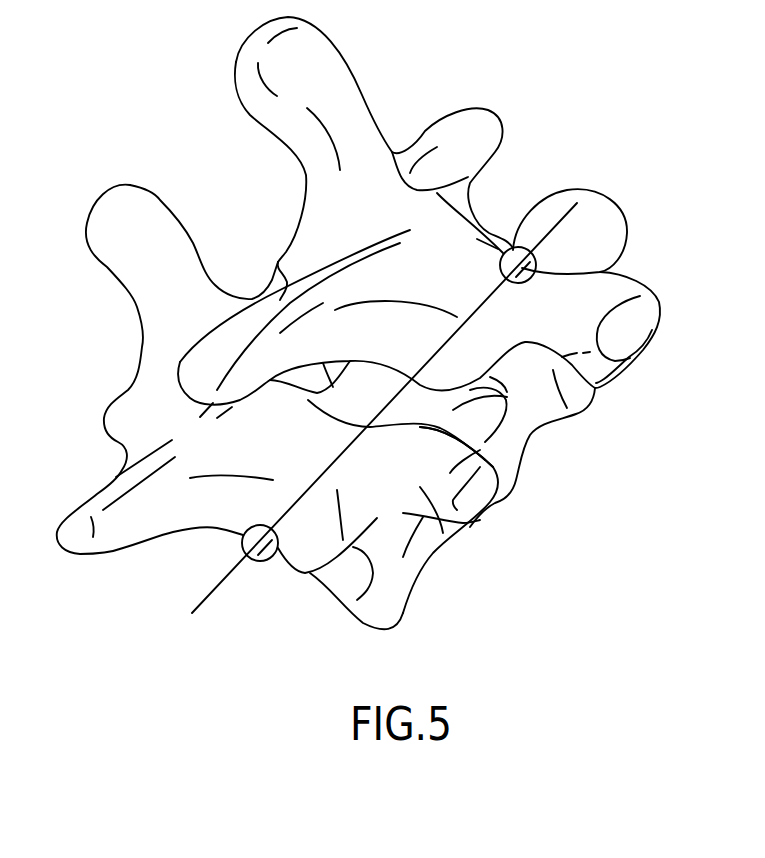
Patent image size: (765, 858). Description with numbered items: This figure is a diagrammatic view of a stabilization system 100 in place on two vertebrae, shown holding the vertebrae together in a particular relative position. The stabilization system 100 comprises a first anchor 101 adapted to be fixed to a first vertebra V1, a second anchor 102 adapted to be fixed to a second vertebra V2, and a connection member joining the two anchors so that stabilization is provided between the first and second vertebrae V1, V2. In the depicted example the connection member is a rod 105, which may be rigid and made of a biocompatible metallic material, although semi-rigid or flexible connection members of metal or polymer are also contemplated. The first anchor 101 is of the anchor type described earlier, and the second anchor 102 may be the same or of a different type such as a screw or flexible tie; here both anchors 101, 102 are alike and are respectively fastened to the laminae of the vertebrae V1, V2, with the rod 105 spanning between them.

The first vertebra V1 is at (163, 367).
The second vertebra V2 is at (347, 237).
The stabilization system 100 is at (397, 472).
The first anchor 101 is at (268, 561).
The second anchor 102 is at (517, 249).
The rod 105 is at (327, 468).